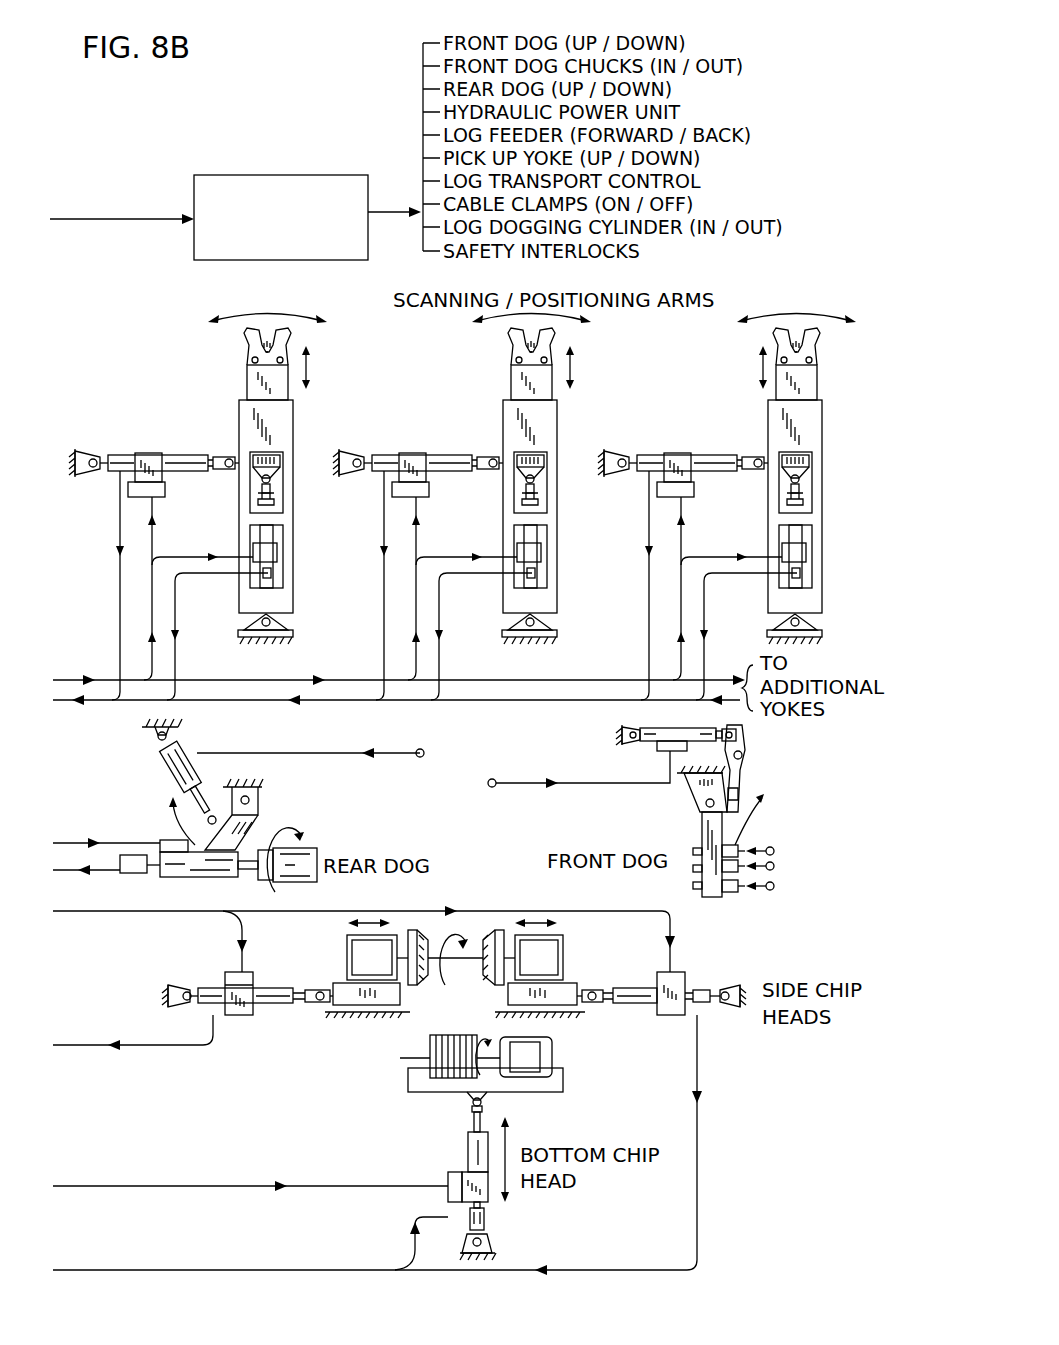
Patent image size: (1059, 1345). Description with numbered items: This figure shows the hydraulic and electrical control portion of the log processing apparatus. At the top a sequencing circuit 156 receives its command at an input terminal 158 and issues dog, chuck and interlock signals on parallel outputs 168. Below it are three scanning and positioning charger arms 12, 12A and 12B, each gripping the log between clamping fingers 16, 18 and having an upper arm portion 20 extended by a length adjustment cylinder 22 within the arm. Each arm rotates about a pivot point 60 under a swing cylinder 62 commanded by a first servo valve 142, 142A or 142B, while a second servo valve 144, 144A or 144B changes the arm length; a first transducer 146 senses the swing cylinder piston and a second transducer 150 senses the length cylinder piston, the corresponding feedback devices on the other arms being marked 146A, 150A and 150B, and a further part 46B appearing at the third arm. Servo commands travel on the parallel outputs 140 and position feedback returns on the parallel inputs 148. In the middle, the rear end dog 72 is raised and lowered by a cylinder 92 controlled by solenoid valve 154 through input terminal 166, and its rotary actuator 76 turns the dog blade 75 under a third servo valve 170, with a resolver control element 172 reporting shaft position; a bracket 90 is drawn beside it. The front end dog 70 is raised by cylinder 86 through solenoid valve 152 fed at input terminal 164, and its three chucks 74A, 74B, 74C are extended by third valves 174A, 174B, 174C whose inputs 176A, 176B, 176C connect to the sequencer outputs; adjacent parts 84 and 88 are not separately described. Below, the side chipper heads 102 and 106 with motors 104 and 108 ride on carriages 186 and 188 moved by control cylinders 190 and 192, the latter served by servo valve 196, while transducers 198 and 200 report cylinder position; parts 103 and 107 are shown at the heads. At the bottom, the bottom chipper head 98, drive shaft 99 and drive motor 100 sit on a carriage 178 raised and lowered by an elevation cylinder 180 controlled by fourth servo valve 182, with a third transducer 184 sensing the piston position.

The log charger arm 12 is at (293, 440).
The charger arm 12A is at (568, 506).
The charger arm 12B is at (827, 506).
The clamping finger 16 is at (250, 335).
The clamping finger 18 is at (286, 333).
The upper arm portion 20 is at (247, 382).
The length adjustment cylinder 22 is at (270, 530).
The hydraulic cylinder 46B is at (647, 437).
The pivot point 60 is at (270, 615).
The swing cylinder 62 is at (187, 455).
The front end dog 70 is at (714, 898).
The rear end dog 72 is at (245, 825).
The chuck 74A is at (693, 851).
The chuck 74B is at (693, 870).
The chuck 74C is at (693, 885).
The end dog blade 75 is at (302, 842).
The rotary actuator 76 is at (172, 878).
The front dog pivot link 84 is at (702, 803).
The cylinder 86 is at (640, 740).
The front dog link arm 88 is at (745, 772).
The rear dog bracket 90 is at (255, 800).
The cylinder 92 is at (168, 769).
The bottom chipper head 98 is at (428, 1050).
The drive shaft 99 is at (487, 1050).
The drive motor 100 is at (552, 1058).
The side chipper head 102 is at (489, 932).
The side chip head hub 103 is at (505, 930).
The motor 104 is at (563, 945).
The side chipper head 106 is at (421, 932).
The side chip head hub 107 is at (410, 930).
The motor 108 is at (347, 960).
The outputs 140 is at (88, 680).
The first servo valve 142 is at (165, 490).
The first servo valve 142A is at (442, 494).
The first servo valve 142B is at (703, 495).
The second servo valve 144 is at (270, 552).
The second servo valve 144A is at (573, 548).
The second servo valve 144B is at (835, 549).
The first transducer 146 is at (118, 455).
The cylinder anchor 146A is at (378, 437).
The parallel inputs 148 is at (62, 702).
The second transducer 150 is at (268, 575).
The position sensor 150A is at (578, 575).
The position sensor 150B is at (840, 578).
The solenoid valve 152 is at (667, 753).
The solenoid valve 154 is at (200, 748).
The sequencing circuit 156 is at (284, 175).
The input terminal 158 is at (132, 218).
The input terminal 164 is at (490, 787).
The input terminal 166 is at (416, 760).
The parallel outputs 168 is at (389, 211).
The third servo valve 170 is at (165, 840).
The resolver control element 172 is at (118, 880).
The third valve 174A is at (740, 846).
The third valve 174B is at (746, 865).
The third valve 174C is at (730, 898).
The input 176A is at (775, 850).
The input 176B is at (775, 869).
The input 176C is at (775, 889).
The carriage 178 is at (543, 1093).
The elevation cylinder 180 is at (468, 1162).
The fourth servo valve 182 is at (448, 1198).
The third transducer 184 is at (490, 1222).
The carriage 186 is at (565, 992).
The carriage 188 is at (358, 1005).
The control cylinder 190 is at (640, 1005).
The control cylinder 192 is at (270, 1003).
The servo valve 196 is at (248, 972).
The transducer 198 is at (699, 1018).
The transducer 200 is at (205, 1005).